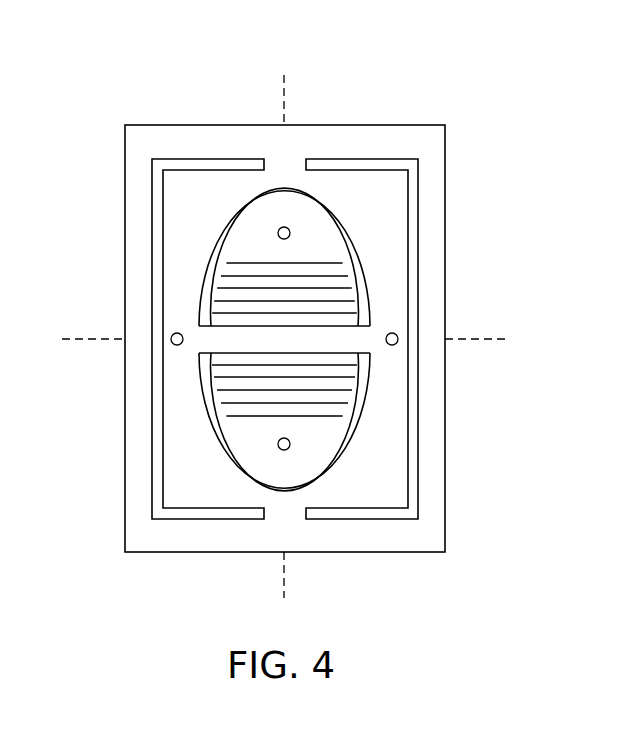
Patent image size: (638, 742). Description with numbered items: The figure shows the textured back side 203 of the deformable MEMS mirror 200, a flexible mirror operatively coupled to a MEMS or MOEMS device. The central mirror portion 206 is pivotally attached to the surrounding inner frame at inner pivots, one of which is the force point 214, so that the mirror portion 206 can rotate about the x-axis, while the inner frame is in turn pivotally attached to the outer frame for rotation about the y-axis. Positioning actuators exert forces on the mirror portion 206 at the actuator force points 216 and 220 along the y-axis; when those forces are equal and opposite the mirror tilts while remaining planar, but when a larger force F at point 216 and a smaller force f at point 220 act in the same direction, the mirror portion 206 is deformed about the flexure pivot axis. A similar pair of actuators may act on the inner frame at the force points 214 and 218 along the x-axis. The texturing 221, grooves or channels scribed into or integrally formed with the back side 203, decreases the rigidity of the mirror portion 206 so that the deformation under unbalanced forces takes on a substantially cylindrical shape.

The MEMS mirror 200 is at (284, 312).
The back side 203 is at (266, 302).
The mirror portion 206 is at (210, 366).
The inner pivot / actuator force point 214 is at (171, 339).
The actuator force point 216 is at (290, 229).
The actuator force point 218 is at (399, 341).
The actuator force point 220 is at (279, 447).
The texturing 221 is at (345, 281).